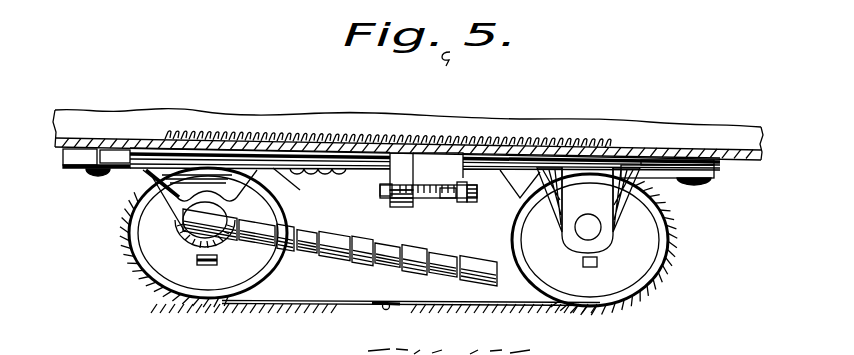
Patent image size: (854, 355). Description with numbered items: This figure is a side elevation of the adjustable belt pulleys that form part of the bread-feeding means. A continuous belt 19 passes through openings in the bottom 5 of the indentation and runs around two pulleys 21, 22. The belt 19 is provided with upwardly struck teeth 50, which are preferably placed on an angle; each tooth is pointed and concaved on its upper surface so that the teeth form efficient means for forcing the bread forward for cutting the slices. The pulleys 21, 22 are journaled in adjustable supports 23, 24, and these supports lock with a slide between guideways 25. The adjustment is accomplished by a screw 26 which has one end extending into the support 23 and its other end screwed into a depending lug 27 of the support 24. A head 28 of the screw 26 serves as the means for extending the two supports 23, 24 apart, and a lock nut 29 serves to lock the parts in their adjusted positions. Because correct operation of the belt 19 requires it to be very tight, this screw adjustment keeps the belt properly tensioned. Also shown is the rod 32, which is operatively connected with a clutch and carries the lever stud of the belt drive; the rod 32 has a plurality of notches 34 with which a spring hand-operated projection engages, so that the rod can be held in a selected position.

The bottom 5 is at (235, 137).
The continuous belt 19 is at (380, 137).
The upwardly struck teeth 50 is at (481, 137).
The guideways 25 is at (152, 147).
The lock nut 29 is at (128, 198).
The pulley 22 is at (158, 243).
The rod 32 is at (298, 245).
The notches 34 is at (423, 268).
The adjustable support 24 is at (392, 189).
The depending lug 27 is at (380, 195).
The screw 26 is at (445, 197).
The adjustable support 23 is at (464, 203).
The head 28 is at (473, 204).
The pulley 21 is at (594, 244).